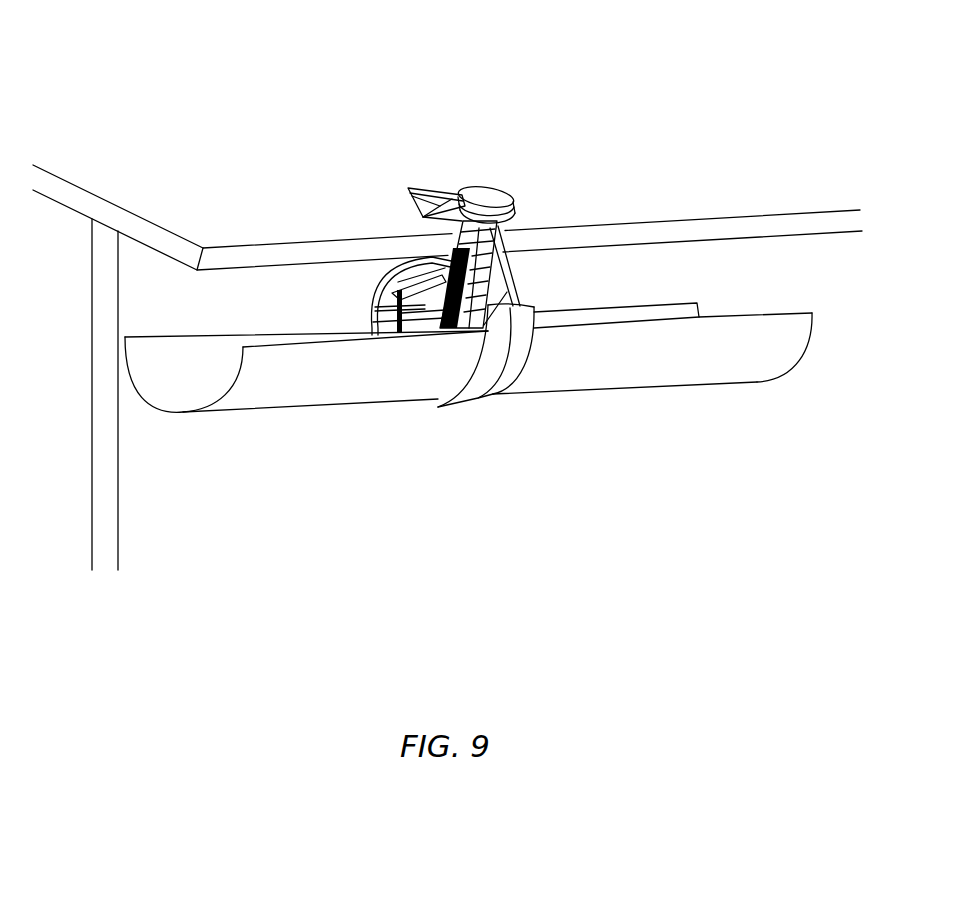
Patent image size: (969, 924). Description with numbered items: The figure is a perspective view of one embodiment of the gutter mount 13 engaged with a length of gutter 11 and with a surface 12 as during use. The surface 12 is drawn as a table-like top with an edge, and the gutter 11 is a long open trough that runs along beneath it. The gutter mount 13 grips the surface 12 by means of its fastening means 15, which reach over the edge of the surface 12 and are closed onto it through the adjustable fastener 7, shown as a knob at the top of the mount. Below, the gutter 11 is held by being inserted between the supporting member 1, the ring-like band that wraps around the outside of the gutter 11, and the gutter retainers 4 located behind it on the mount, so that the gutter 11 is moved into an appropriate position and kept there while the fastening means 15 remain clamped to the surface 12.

The gutter mount 13 is at (274, 108).
The surface 12 is at (372, 247).
The gutter 11 is at (319, 382).
The supporting member 1 is at (480, 390).
The gutter retainers 4 is at (390, 306).
The adjustable fastener 7 is at (506, 176).
The fastening means 15 is at (403, 193).